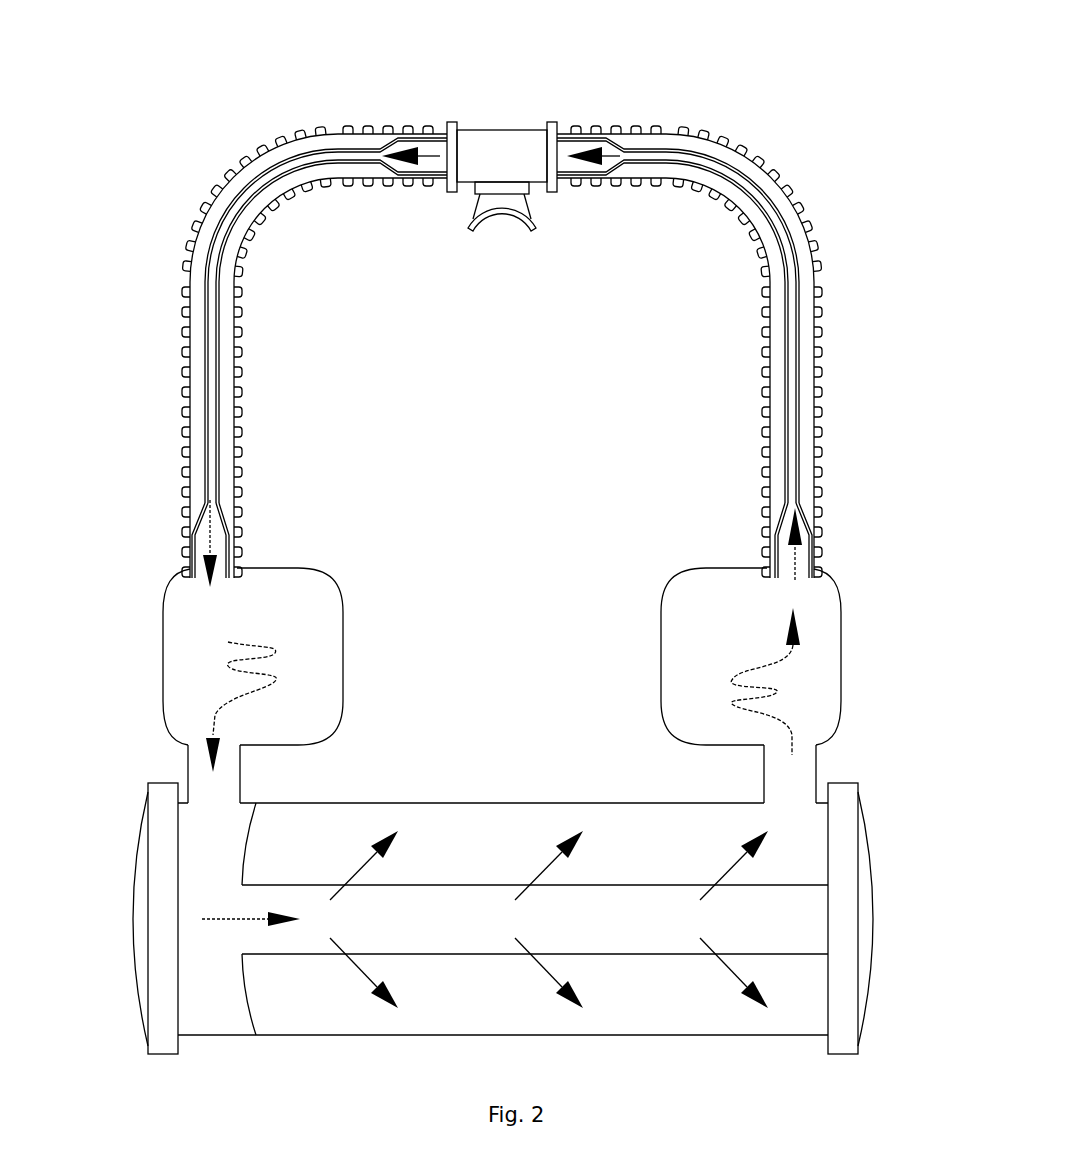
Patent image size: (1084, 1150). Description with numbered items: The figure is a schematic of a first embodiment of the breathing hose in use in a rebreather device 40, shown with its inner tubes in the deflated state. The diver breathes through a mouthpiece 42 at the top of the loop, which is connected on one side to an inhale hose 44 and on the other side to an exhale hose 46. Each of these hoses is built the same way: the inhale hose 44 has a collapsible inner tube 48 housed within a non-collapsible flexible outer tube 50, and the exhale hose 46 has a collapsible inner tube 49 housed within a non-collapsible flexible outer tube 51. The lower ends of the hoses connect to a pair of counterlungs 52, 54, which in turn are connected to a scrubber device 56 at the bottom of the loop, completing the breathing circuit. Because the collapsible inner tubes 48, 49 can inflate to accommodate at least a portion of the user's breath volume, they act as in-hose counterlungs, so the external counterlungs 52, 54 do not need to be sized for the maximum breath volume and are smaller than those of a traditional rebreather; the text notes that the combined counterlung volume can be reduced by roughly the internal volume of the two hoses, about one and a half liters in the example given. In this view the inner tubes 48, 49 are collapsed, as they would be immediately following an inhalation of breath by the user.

The rebreather device 40 is at (172, 88).
The mouthpiece 42 is at (520, 132).
The inhale hose 44 is at (761, 353).
The exhale hose 46 is at (245, 356).
The collapsible inner tube 48 is at (903, 135).
The collapsible inner tube 49 is at (110, 135).
The non-collapsible flexible outer tube 50 is at (228, 178).
The non-collapsible flexible outer tube 51 is at (763, 172).
The counterlung 52 is at (186, 622).
The counterlung 54 is at (817, 622).
The scrubber device 56 is at (210, 962).